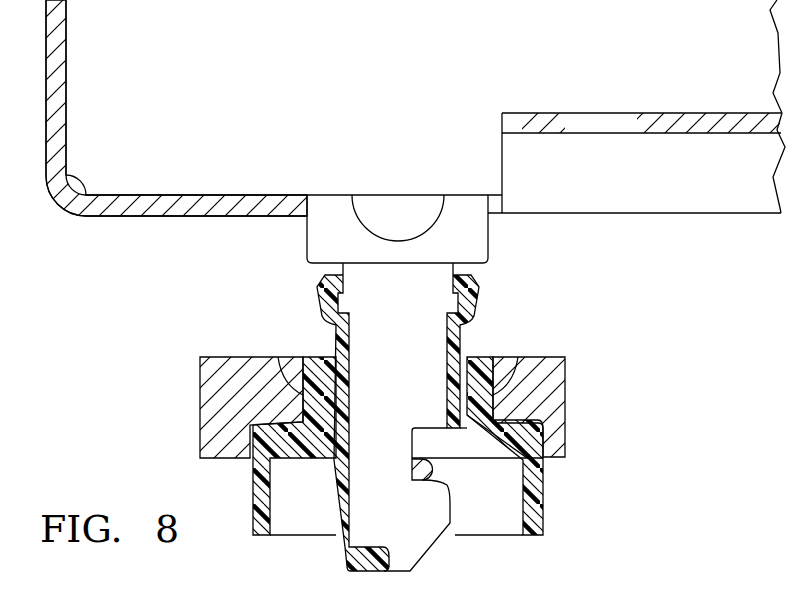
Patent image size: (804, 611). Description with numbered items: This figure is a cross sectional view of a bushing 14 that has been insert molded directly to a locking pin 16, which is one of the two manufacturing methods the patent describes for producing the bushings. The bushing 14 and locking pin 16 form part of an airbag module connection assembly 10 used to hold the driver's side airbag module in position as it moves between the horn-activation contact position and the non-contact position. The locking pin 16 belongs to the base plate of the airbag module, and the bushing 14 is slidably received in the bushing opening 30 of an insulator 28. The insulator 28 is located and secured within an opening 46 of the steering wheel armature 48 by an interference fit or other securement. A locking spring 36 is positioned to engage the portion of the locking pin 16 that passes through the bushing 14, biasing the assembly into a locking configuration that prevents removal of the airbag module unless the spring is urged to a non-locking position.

The airbag module connection assembly 10 is at (659, 299).
The bushing 14 is at (478, 303).
The locking pin 16 is at (480, 250).
The insulator 28 is at (540, 467).
The bushing opening 30 is at (470, 417).
The locking spring 36 is at (451, 515).
The opening 46 is at (250, 458).
The steering wheel armature 48 is at (560, 400).